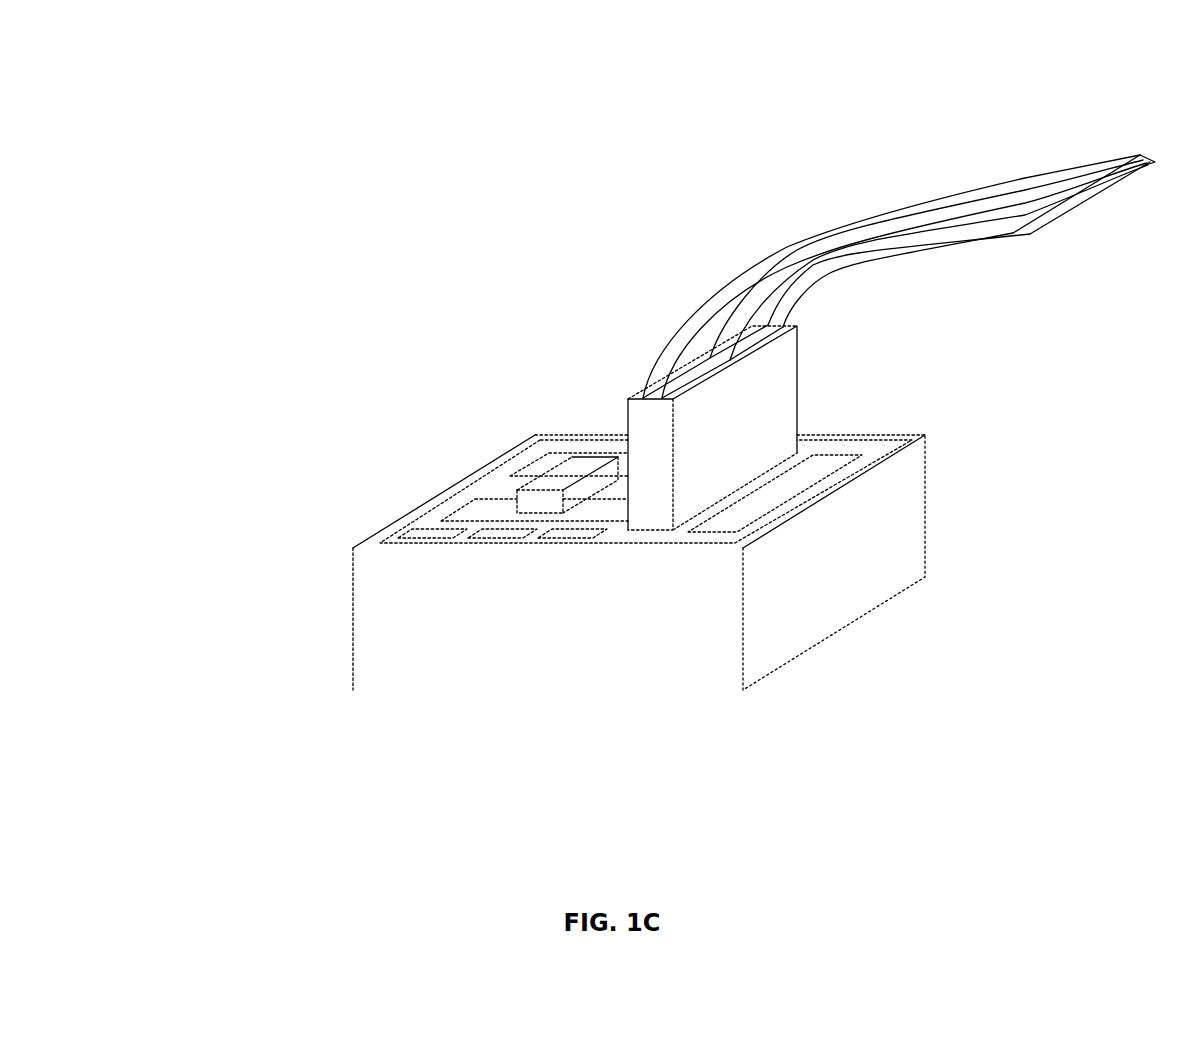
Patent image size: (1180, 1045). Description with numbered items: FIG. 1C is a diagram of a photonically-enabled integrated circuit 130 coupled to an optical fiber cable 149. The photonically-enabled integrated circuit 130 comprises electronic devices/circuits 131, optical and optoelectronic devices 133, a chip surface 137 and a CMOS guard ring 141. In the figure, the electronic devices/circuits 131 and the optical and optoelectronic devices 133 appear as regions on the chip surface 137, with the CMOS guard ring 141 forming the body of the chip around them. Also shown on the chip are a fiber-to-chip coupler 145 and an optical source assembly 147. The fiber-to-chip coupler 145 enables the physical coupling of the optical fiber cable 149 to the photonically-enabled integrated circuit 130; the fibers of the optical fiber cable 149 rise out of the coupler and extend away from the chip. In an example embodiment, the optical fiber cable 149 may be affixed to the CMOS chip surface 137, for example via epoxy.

The photonically-enabled integrated circuit 130 is at (200, 99).
The electronic devices/circuits 131 is at (557, 539).
The optical and optoelectronic devices 133 is at (475, 517).
The chip surface 137 is at (492, 489).
The CMOS guard ring 141 is at (914, 436).
The fiber-to-chip coupler 145 is at (721, 439).
The optical source assembly 147 is at (576, 468).
The optical fiber cable 149 is at (961, 186).